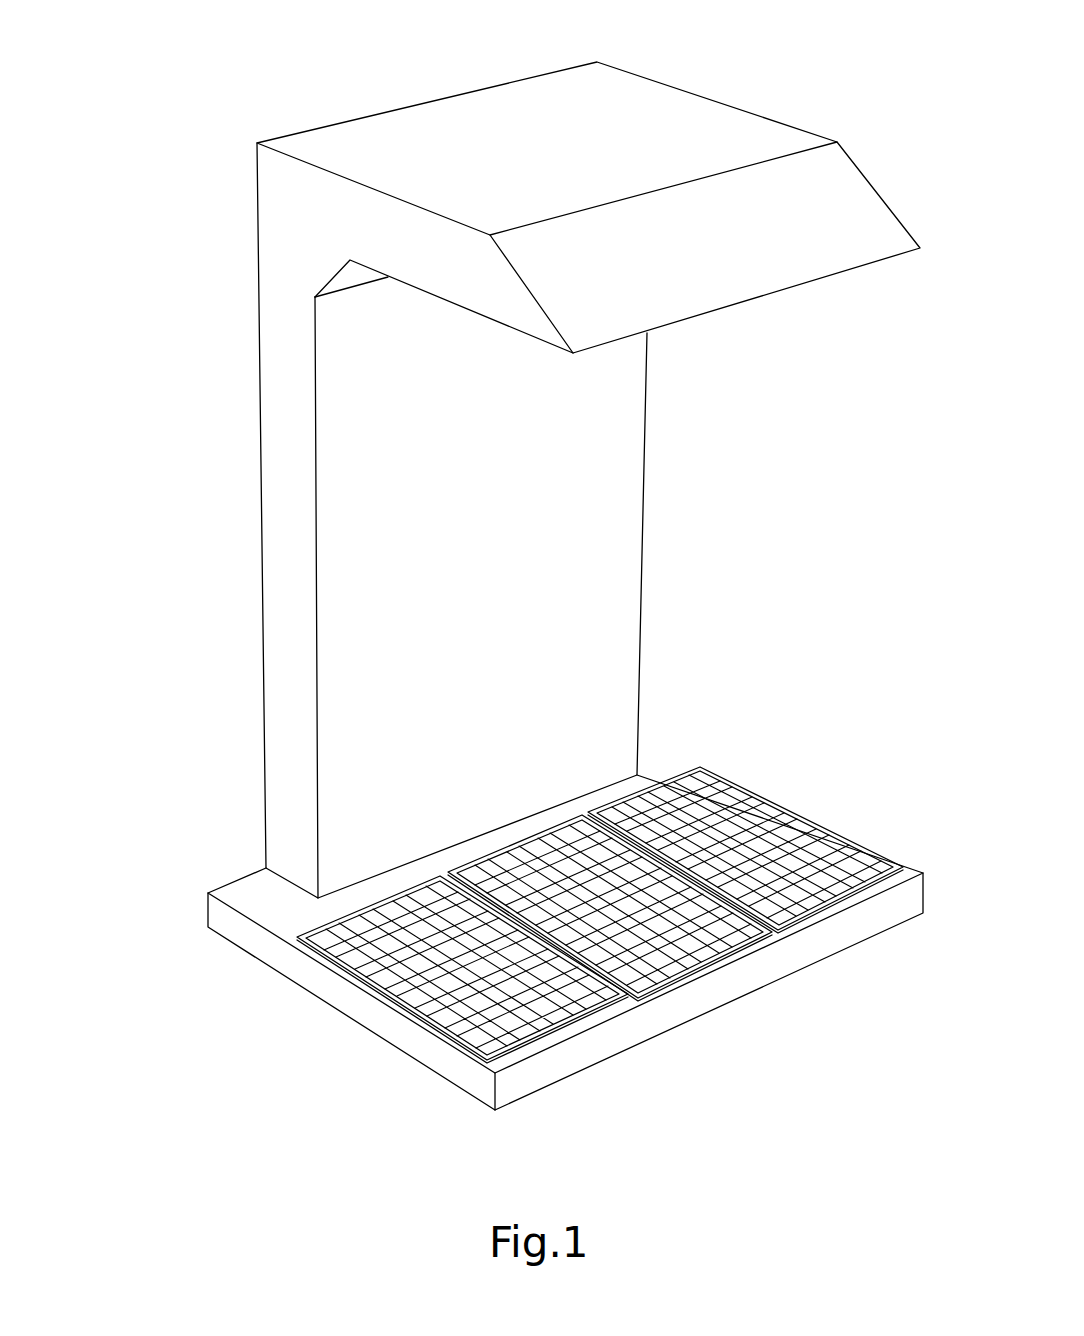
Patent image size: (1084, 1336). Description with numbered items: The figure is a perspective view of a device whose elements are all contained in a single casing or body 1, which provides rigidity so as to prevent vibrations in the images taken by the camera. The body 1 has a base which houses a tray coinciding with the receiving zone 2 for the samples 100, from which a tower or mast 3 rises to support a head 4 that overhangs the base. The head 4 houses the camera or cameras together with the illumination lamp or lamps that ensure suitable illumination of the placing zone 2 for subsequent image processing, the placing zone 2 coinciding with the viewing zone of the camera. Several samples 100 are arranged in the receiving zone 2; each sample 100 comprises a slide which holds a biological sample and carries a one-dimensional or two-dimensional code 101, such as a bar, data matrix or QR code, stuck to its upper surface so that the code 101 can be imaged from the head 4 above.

The casing or body 1 is at (203, 368).
The sample receiving zone 2 is at (248, 890).
The tower or mast 3 is at (610, 535).
The head 4 is at (760, 145).
The sample 100 is at (773, 837).
The code 101 is at (807, 827).